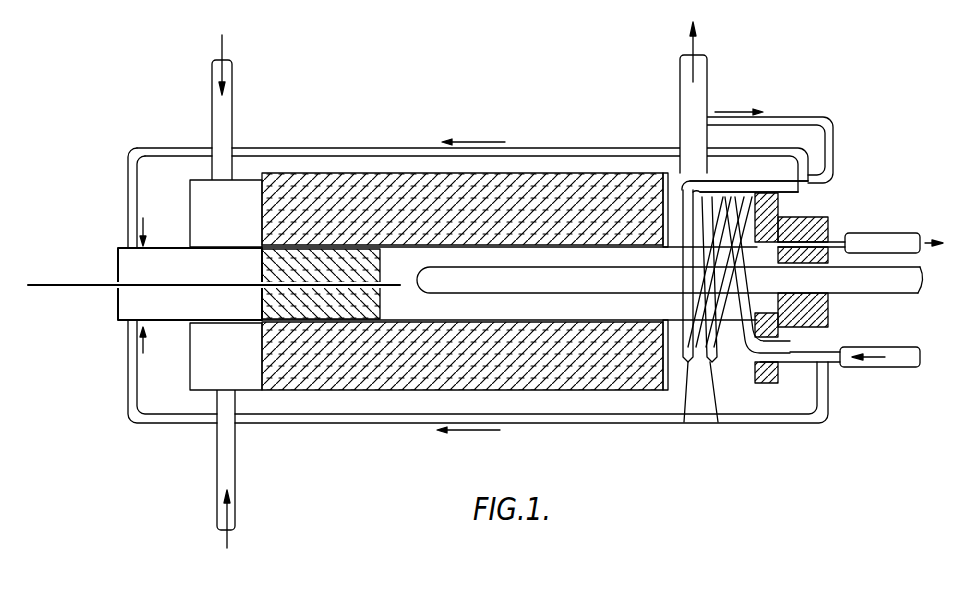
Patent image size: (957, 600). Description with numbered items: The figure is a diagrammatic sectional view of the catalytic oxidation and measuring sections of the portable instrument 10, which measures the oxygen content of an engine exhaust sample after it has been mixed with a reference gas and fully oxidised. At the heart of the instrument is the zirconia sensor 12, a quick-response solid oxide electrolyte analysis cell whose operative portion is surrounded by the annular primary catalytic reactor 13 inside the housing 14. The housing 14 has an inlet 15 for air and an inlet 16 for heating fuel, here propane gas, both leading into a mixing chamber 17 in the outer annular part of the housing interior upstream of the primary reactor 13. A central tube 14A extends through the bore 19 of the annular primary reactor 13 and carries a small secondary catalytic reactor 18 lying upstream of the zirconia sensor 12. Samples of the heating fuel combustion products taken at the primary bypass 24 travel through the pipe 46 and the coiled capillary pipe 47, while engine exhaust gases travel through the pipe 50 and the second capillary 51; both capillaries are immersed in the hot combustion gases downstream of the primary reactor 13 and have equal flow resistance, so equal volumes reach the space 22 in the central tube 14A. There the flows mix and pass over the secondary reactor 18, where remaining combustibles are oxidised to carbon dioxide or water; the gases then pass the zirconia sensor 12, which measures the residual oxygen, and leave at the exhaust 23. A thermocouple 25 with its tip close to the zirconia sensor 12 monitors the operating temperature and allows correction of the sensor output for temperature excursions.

The portable instrument 10 is at (500, 99).
The zirconia sensor 12 is at (428, 281).
The primary catalytic reactor 13 is at (360, 190).
The housing 14 is at (398, 393).
The central tube 14A is at (572, 243).
The inlet for air 15 is at (233, 88).
The inlet for heating fuel 16 is at (237, 466).
The mixing chamber 17 is at (226, 213).
The secondary catalytic reactor 18 is at (259, 320).
The bore 19 is at (518, 245).
The space 22 is at (190, 284).
The exhaust 23 is at (870, 233).
The primary bypass 24 is at (708, 79).
The thermocouple 25 is at (72, 285).
The pipe 46 is at (309, 148).
The coiled capillary pipe 47 is at (745, 316).
The pipe 50 is at (558, 424).
The second capillary 51 is at (681, 406).